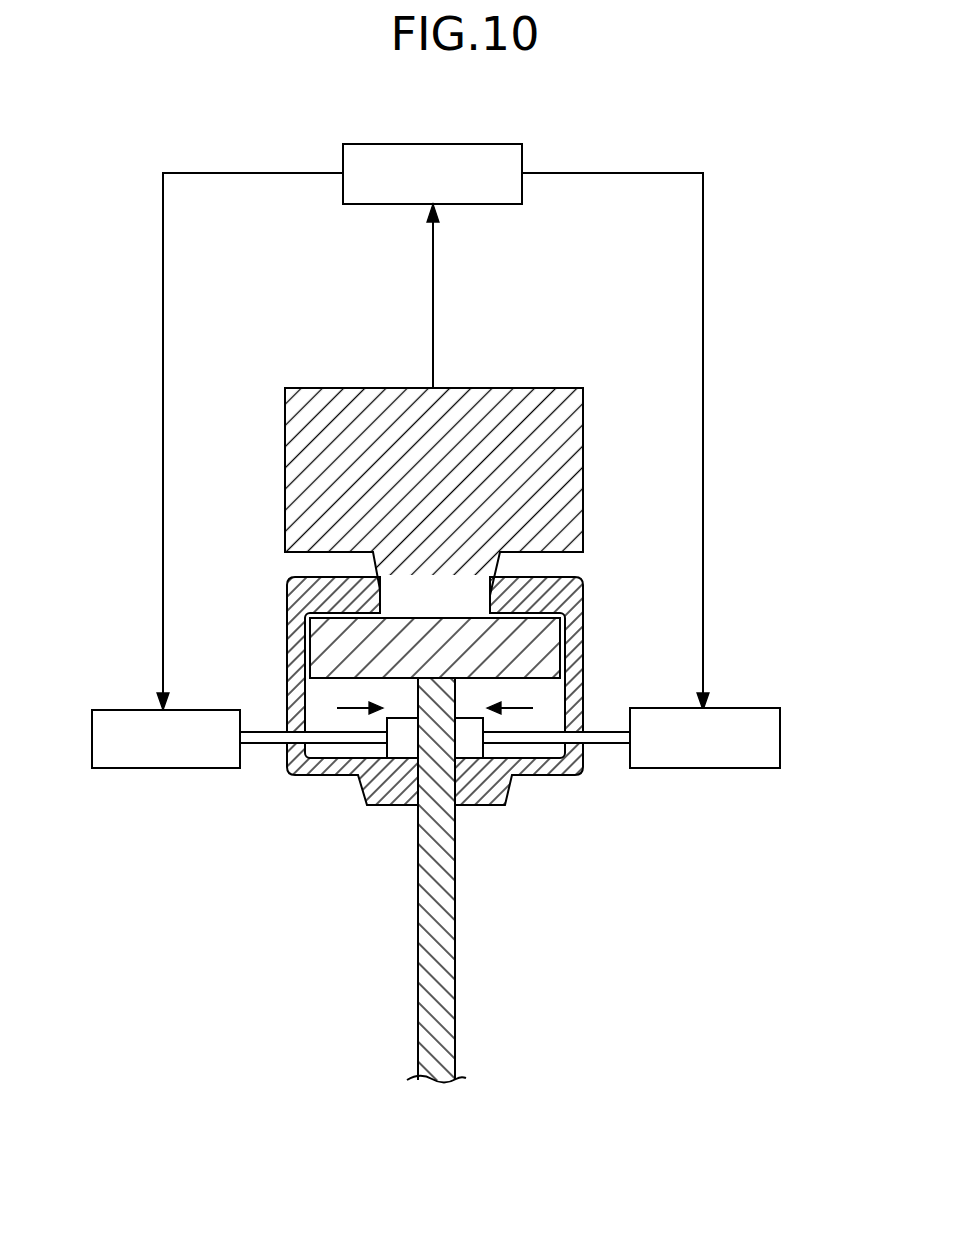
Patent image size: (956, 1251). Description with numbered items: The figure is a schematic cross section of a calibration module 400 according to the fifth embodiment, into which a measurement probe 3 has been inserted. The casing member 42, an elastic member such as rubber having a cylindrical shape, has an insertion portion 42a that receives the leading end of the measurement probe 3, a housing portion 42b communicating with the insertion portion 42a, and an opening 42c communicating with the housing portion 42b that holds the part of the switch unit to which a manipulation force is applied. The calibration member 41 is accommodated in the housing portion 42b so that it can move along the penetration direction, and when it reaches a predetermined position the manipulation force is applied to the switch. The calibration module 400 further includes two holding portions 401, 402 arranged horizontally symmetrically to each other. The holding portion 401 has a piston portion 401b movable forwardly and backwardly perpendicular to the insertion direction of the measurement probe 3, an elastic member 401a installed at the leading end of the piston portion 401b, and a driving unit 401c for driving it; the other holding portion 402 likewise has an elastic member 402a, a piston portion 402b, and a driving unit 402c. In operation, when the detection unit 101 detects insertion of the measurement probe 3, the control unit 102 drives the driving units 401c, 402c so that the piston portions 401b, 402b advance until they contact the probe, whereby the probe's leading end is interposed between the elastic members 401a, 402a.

The measurement probe 3 is at (455, 970).
The calibration member 41 is at (552, 630).
The casing member 42 is at (481, 679).
The insertion portion 42a is at (447, 786).
The housing portion 42b is at (542, 698).
The opening 42c is at (497, 578).
The detection unit 101 is at (560, 457).
The control unit 102 is at (433, 144).
The calibration module 400 is at (436, 590).
The holding portion 401 is at (255, 819).
The elastic member 401a is at (382, 798).
The piston portion 401b is at (268, 743).
The driving unit 401c is at (177, 768).
The holding portion 402 is at (617, 818).
The elastic member 402a is at (489, 798).
The piston portion 402b is at (602, 743).
The driving unit 402c is at (693, 768).